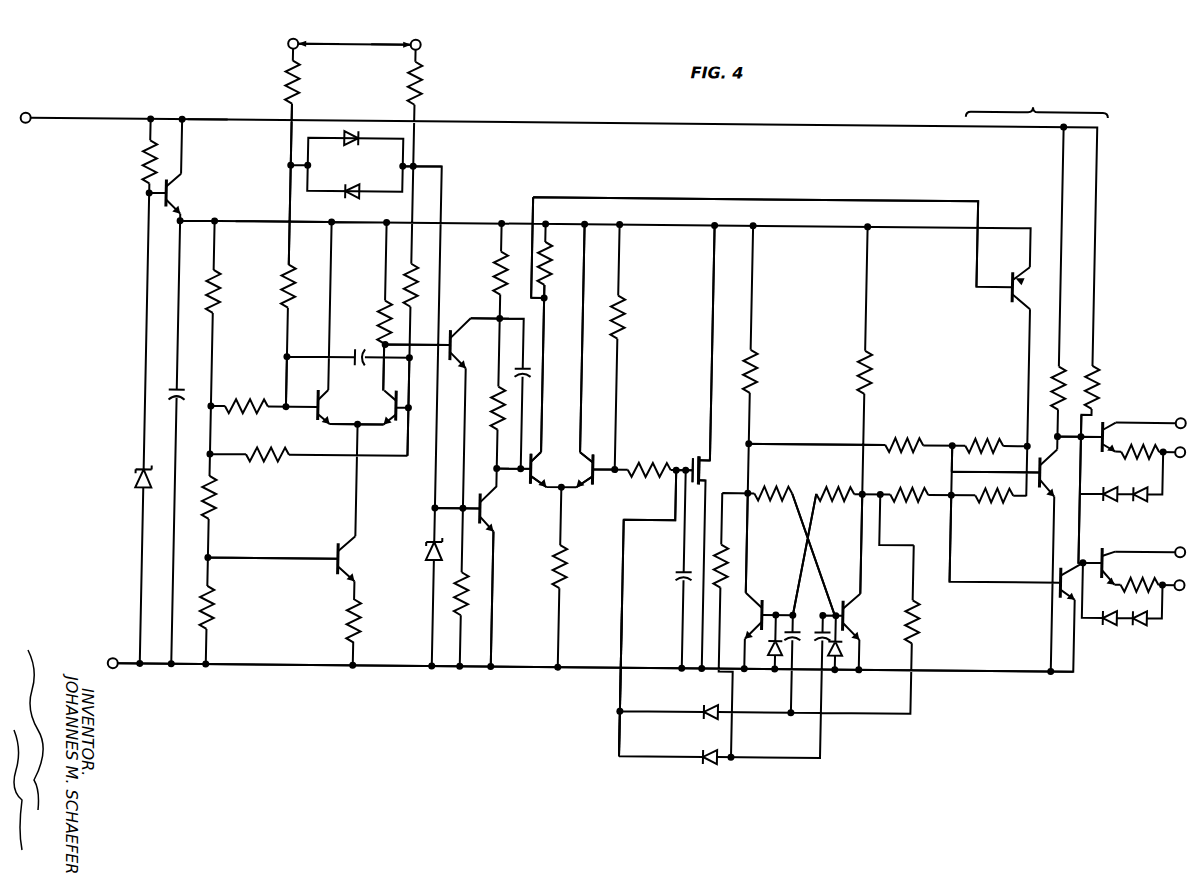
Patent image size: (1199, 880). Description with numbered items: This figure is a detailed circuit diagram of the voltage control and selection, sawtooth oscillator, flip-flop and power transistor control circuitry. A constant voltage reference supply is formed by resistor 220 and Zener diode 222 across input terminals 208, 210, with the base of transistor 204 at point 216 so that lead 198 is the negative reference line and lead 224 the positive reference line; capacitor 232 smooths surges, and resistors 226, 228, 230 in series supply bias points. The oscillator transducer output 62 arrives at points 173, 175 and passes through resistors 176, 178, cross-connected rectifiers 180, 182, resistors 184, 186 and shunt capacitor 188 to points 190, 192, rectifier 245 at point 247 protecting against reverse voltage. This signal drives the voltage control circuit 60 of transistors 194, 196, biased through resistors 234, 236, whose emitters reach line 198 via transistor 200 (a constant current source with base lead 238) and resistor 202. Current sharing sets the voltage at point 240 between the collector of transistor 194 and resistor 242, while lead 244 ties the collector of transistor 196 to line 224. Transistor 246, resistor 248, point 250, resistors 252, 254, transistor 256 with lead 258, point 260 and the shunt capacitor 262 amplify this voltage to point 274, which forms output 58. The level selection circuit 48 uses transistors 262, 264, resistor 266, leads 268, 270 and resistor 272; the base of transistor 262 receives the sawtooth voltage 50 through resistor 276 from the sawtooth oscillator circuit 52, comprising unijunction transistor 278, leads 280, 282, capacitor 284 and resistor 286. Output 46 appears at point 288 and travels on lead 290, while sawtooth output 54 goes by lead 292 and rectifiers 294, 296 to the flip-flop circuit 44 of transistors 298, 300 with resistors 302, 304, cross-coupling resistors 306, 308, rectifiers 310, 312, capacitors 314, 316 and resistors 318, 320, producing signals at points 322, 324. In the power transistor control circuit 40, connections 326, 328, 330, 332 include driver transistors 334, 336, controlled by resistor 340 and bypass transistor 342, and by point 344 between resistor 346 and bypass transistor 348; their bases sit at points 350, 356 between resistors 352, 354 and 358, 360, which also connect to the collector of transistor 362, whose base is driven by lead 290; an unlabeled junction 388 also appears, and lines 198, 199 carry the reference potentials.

The power transistor control circuit 40 is at (1052, 89).
The flip-flop circuit 44 is at (792, 562).
The input from level selection circuit 46 is at (612, 235).
The level selection circuit 48 is at (567, 442).
The sawtooth reference signal 50 is at (607, 458).
The sawtooth oscillator circuit 52 is at (694, 434).
The sawtooth oscillator output 54 is at (597, 680).
The voltage control circuit output 58 is at (417, 335).
The voltage control circuit 60 is at (330, 422).
The input from oscillator transducer circuit 62 is at (354, 45).
The point 173 is at (424, 40).
The point 175 is at (296, 36).
The resistor 176 is at (423, 78).
The resistor 178 is at (299, 78).
The rectifier 180 is at (356, 127).
The rectifier 182 is at (352, 180).
The resistor 184 is at (416, 278).
The resistor 186 is at (286, 300).
The shunt capacitor 188 is at (362, 345).
The point 190 is at (423, 407).
The point 192 is at (296, 400).
The transistor 194 is at (398, 408).
The transistor 196 is at (340, 407).
The negative reference voltage line 198 is at (296, 664).
The line 199 is at (208, 118).
The transistor 200 is at (355, 558).
The resistor 202 is at (372, 620).
The transistor 204 is at (175, 192).
The input terminal 208 is at (26, 123).
The input terminal 210 is at (126, 656).
The point 216 is at (150, 193).
The resistor 220 is at (146, 160).
The Zener diode 222 is at (148, 482).
The positive reference line 224 is at (254, 219).
The resistor 226 is at (224, 285).
The resistor 228 is at (226, 493).
The resistor 230 is at (226, 604).
The capacitor 232 is at (188, 386).
The resistor 234 is at (284, 455).
The resistor 236 is at (249, 398).
The lead 238 is at (278, 555).
The point 240 is at (386, 360).
The resistor 242 is at (386, 298).
The lead 244 is at (297, 305).
The rectifier 245 is at (438, 556).
The transistor 246 is at (472, 343).
The point 247 is at (424, 163).
The resistor 248 is at (469, 592).
The point 250 is at (502, 313).
The resistor 252 is at (502, 268).
The resistor 254 is at (503, 418).
The transistor 256 is at (496, 504).
The lead 258 is at (506, 585).
The point 260 is at (443, 504).
The capacitor / transistor 262 is at (530, 362).
The transistor 264 is at (549, 468).
The resistor 266 is at (575, 570).
The lead 268 is at (588, 300).
The lead 270 is at (552, 330).
The resistor 272 is at (559, 263).
The point 274 is at (501, 466).
The resistor 276 is at (656, 458).
The unijunction transistor 278 is at (712, 464).
The lead 280 is at (719, 298).
The lead 282 is at (686, 524).
The capacitor 284 is at (690, 578).
The resistor 286 is at (630, 325).
The point 288 is at (557, 300).
The lead 290 is at (800, 192).
The lead 292 is at (635, 566).
The rectifier 294 is at (727, 757).
The rectifier 296 is at (725, 712).
The transistor 298 is at (862, 608).
The transistor 300 is at (772, 608).
The resistor 302 is at (878, 371).
The resistor 304 is at (762, 372).
The resistor 306 is at (834, 482).
The resistor 308 is at (778, 482).
The rectifier 310 is at (850, 658).
The rectifier 312 is at (785, 656).
The capacitor 314 is at (807, 630).
The capacitor 316 is at (810, 600).
The resistor 318 is at (930, 616).
The resistor 320 is at (738, 542).
The point 322 is at (762, 437).
The point 324 is at (908, 482).
The connection 326 is at (1176, 410).
The connection 328 is at (1188, 447).
The connection 330 is at (1162, 540).
The connection 332 is at (1187, 572).
The driver transistor 334 is at (1131, 440).
The driver transistor 336 is at (1130, 570).
The resistor 340 is at (1062, 378).
The bypass transistor 342 is at (1061, 472).
The point 344 is at (1093, 550).
The resistor 346 is at (1104, 386).
The bypass transistor 348 is at (1086, 578).
The point 350 is at (962, 432).
The resistor 352 is at (912, 430).
The resistor 354 is at (993, 432).
The point 356 is at (963, 492).
The resistor 358 is at (988, 483).
The resistor 360 is at (990, 482).
The transistor 362 is at (1032, 288).
The conductor 388 is at (1064, 424).